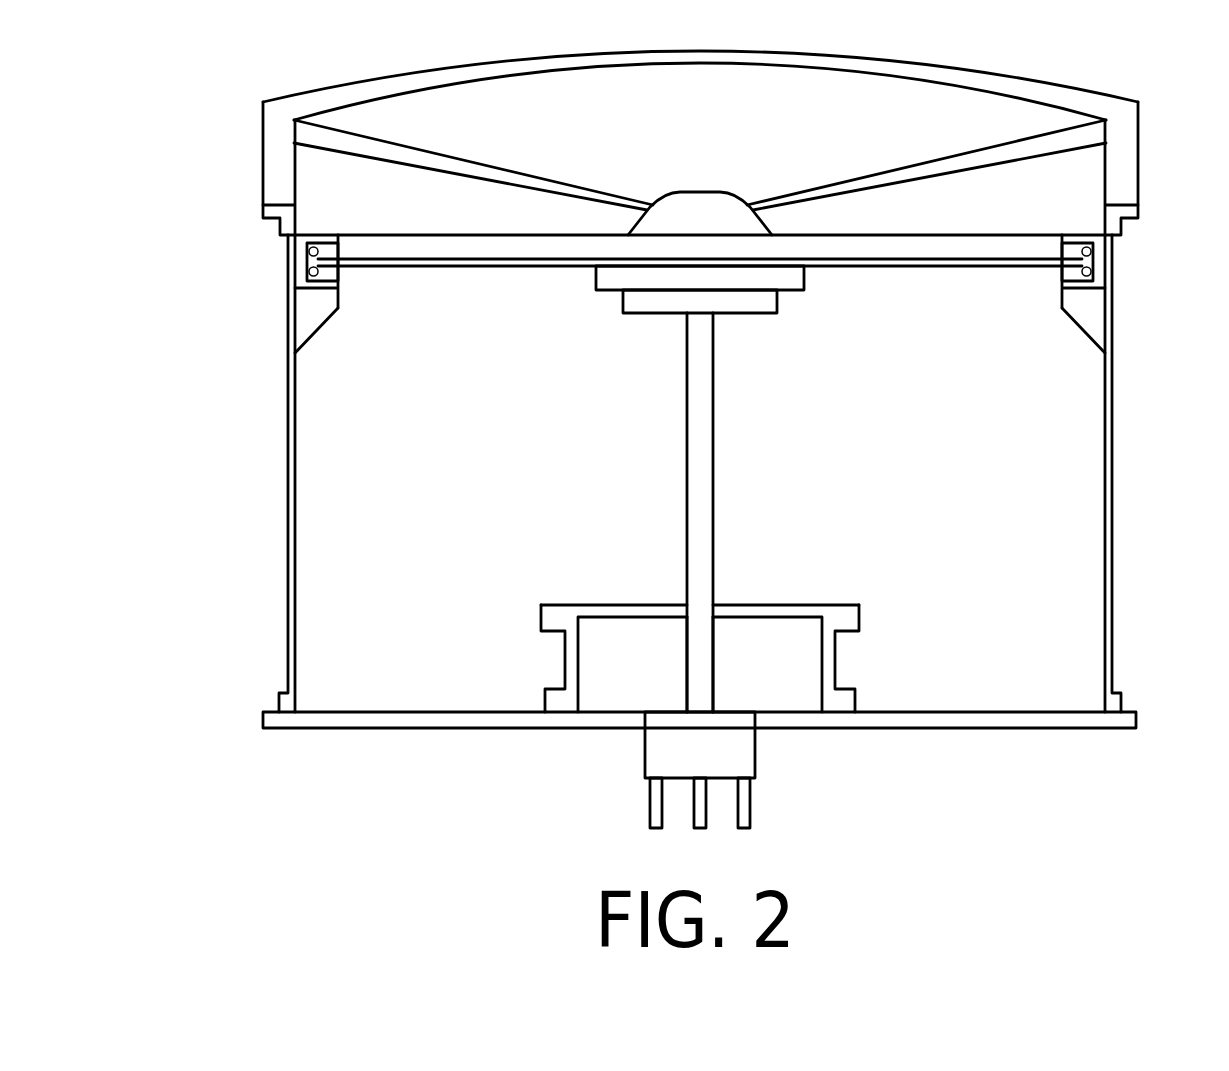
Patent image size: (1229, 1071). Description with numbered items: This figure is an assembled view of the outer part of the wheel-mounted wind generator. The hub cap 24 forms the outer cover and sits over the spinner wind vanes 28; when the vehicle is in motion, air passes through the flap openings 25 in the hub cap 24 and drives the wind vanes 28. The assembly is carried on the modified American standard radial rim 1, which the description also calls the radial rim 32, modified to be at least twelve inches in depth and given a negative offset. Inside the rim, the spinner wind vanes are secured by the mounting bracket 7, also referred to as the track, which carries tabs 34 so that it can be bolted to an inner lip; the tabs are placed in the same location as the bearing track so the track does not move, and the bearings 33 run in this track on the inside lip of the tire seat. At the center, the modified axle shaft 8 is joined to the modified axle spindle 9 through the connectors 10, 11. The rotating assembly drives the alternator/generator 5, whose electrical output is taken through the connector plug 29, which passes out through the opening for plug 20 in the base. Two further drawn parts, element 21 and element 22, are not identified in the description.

The modified American standard radial rim 1 is at (287, 510).
The alternator/generator 5 is at (860, 598).
The mounting bracket 7 is at (292, 265).
The modified axle shaft 8 is at (713, 475).
The modified axle spindle 9 is at (530, 268).
The connector 10 is at (805, 286).
The connector 11 is at (777, 316).
The opening for plug 20 is at (642, 722).
The lower shaft section 21 is at (687, 640).
The light source dome 22 is at (700, 190).
The hub cap 24 is at (535, 58).
The flap openings 25 is at (560, 664).
The spinner wind vanes 28 is at (840, 177).
The connector plug 29 is at (756, 764).
The radial rim 32 is at (262, 214).
The bearings 33 is at (320, 248).
The tabs 34 is at (323, 337).